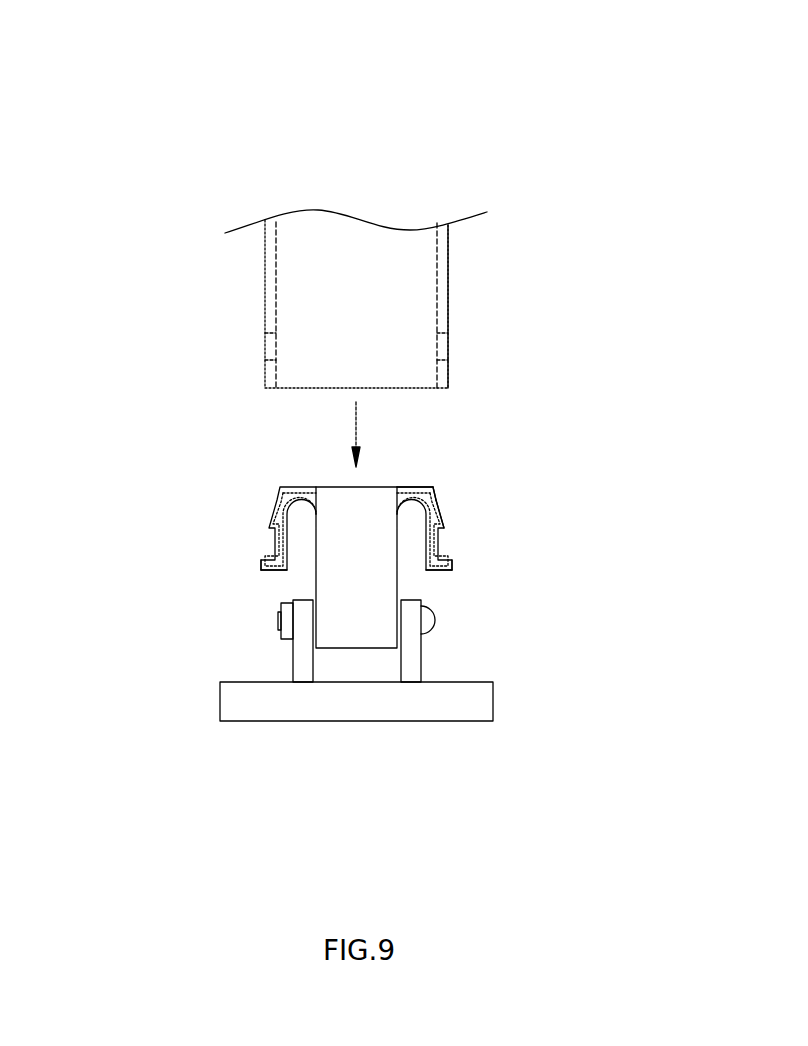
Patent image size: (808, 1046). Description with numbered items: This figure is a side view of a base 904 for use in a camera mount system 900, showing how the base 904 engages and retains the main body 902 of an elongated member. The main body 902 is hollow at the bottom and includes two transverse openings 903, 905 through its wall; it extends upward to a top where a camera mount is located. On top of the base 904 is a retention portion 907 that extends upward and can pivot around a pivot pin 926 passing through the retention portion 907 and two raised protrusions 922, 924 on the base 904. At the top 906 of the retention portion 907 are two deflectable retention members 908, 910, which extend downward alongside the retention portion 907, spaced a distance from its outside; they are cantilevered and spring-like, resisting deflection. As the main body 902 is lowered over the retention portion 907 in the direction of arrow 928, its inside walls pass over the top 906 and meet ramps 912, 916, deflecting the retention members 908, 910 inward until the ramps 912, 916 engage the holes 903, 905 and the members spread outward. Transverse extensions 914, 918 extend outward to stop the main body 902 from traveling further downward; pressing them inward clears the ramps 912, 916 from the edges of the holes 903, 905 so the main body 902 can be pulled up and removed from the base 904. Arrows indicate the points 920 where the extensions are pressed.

The camera mount system 900 is at (803, 69).
The main body 902 is at (264, 268).
The transverse opening 903 is at (264, 347).
The transverse opening 905 is at (449, 347).
The arrow 928 is at (353, 430).
The deflectable retention member 910 is at (280, 488).
The ramp 912 is at (270, 528).
The transverse extension 914 is at (267, 573).
The ramp 916 is at (447, 528).
The transverse extension 918 is at (453, 558).
The corner 920 is at (246, 582).
The retention portion 907 is at (407, 487).
The top 906 is at (435, 487).
The deflectable retention member 908 is at (435, 490).
The raised protrusion 924 is at (293, 660).
The raised protrusion 922 is at (421, 656).
The pivot pin 926 is at (430, 621).
The base 904 is at (220, 700).